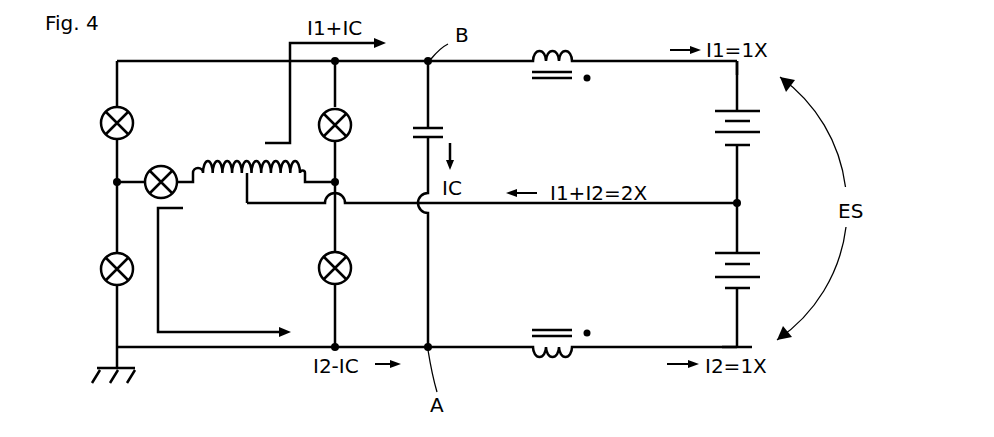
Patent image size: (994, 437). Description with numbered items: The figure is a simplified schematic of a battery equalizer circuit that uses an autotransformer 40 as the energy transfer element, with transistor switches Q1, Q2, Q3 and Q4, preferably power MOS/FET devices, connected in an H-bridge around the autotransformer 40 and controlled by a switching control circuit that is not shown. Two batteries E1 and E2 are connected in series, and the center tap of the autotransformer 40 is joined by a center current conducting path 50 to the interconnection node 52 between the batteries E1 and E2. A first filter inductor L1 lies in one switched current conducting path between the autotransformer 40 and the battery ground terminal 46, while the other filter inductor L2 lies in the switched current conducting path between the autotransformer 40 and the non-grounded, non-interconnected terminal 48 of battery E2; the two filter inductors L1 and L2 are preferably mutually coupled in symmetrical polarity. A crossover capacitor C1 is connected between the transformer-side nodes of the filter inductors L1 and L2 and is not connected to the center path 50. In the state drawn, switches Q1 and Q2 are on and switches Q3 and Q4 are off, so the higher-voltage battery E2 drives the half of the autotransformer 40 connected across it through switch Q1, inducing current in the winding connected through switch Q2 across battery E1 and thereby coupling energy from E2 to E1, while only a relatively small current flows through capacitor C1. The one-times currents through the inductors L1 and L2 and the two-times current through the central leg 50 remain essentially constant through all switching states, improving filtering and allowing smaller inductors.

The autotransformer 40 is at (207, 160).
The battery ground terminal 46 is at (752, 348).
The non-grounded, non-interconnected battery terminal 48 is at (740, 64).
The center current conducting path 50 is at (571, 207).
The interconnection node 52 is at (742, 202).
The transistor switch Q1 is at (348, 113).
The transistor switch Q2 is at (106, 258).
The transistor switch Q3 is at (106, 112).
The transistor switch Q4 is at (348, 256).
The crossover capacitor C1 is at (415, 135).
The first filter inductor L1 is at (555, 363).
The filter inductor L2 is at (555, 49).
The battery E1 is at (755, 270).
The battery E2 is at (755, 128).